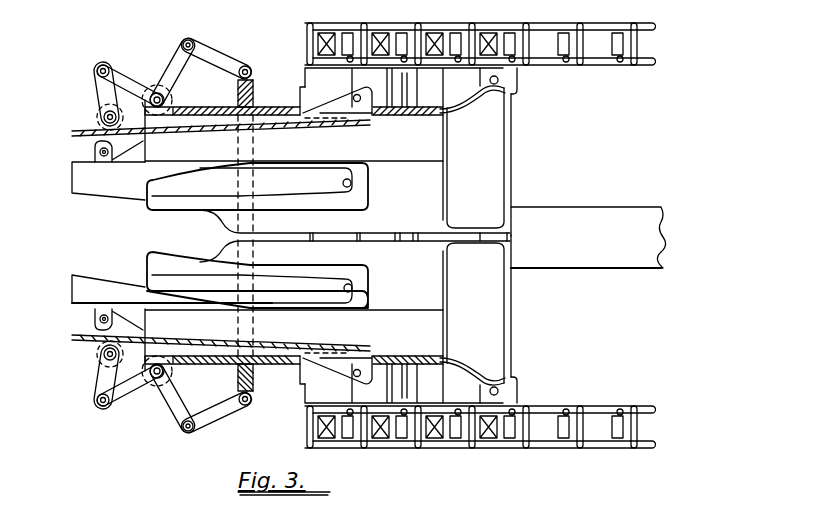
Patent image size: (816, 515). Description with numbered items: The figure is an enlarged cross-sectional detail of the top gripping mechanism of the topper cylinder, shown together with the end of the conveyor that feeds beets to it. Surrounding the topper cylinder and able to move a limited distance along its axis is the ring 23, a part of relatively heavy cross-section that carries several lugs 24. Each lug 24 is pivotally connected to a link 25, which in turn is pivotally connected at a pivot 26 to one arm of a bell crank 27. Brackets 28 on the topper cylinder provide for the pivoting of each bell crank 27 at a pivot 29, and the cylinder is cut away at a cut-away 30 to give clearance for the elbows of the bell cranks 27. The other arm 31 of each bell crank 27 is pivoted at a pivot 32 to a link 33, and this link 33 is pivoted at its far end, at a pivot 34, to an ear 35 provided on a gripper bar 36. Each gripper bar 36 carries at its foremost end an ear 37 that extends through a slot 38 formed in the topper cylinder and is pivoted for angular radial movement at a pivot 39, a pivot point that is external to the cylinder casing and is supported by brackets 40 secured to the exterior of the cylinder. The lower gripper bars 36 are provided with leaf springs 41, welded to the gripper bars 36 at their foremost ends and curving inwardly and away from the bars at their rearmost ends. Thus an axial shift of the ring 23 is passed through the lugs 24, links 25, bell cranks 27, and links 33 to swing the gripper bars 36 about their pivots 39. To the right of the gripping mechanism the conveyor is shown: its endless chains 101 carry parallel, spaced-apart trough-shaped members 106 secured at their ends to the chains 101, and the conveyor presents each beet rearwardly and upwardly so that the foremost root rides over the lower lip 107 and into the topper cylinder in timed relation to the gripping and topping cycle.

The ring 23 is at (254, 92).
The lug 24 is at (250, 74).
The link 25 is at (210, 55).
The pivot 26 is at (190, 40).
The bell crank 27 is at (172, 68).
The bracket 28 is at (173, 109).
The pivot 29 is at (157, 93).
The cut-away 30 is at (168, 135).
The arm 31 is at (118, 68).
The pivot 32 is at (98, 70).
The link 33 is at (96, 94).
The pivot 34 is at (99, 117).
The ear 35 is at (75, 135).
The gripper bar 36 is at (73, 170).
The ear 37 is at (345, 118).
The slot 38 is at (388, 117).
The pivot 39 is at (361, 95).
The bracket 40 is at (312, 104).
The leaf spring 41 is at (162, 268).
The endless chain 101 is at (592, 64).
The trough-shaped member 106 is at (510, 180).
The lower lip 107 is at (497, 143).